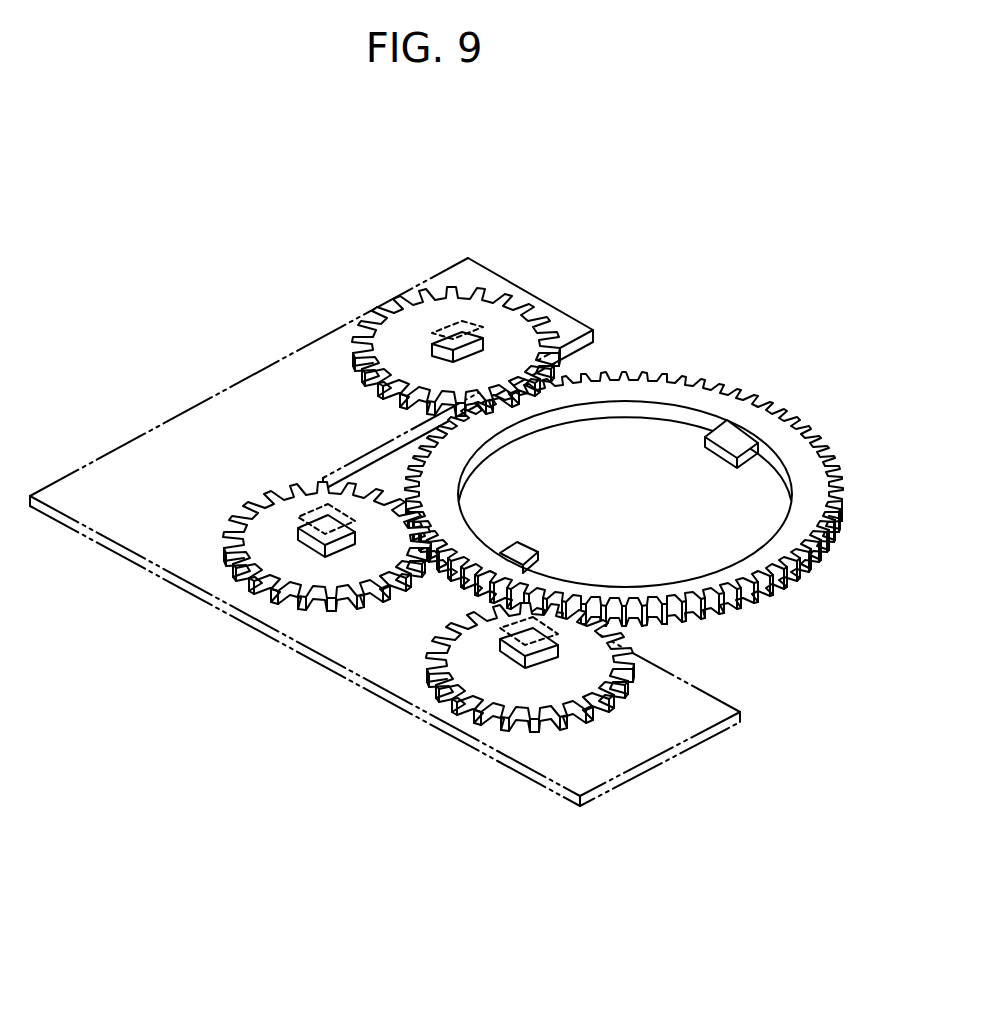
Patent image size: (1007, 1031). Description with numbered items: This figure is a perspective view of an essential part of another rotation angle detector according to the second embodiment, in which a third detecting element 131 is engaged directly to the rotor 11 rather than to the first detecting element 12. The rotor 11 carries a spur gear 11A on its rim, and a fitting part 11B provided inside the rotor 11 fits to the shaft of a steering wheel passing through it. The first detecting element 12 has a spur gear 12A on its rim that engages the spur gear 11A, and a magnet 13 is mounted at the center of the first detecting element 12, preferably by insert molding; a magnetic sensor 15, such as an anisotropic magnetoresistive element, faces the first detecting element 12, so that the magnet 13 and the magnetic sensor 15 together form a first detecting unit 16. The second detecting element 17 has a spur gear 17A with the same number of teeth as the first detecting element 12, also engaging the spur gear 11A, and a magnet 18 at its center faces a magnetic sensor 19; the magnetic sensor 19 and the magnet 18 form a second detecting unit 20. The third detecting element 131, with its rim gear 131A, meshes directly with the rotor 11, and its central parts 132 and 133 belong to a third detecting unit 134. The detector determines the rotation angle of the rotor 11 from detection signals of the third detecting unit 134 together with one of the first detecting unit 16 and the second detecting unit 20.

The rotor 11 is at (667, 395).
The spur gear 11A is at (765, 603).
The fitting part 11B is at (735, 437).
The first detecting element 12 is at (273, 522).
The spur gear 12A is at (297, 612).
The magnet 13 is at (318, 553).
The magnetic sensor 15 is at (300, 535).
The first detecting unit 16 is at (84, 630).
The second detecting element 17 is at (570, 677).
The spur gear 17A is at (567, 730).
The magnet 18 is at (520, 665).
The magnetic sensor 19 is at (507, 650).
The second detecting unit 20 is at (313, 760).
The third detecting element 131 is at (445, 312).
The spur gear of third detecting element 131A is at (493, 297).
The magnet of third detecting element 132 is at (433, 350).
The magnetic sensor of third detecting element 133 is at (442, 330).
The third detecting unit 134 is at (300, 236).